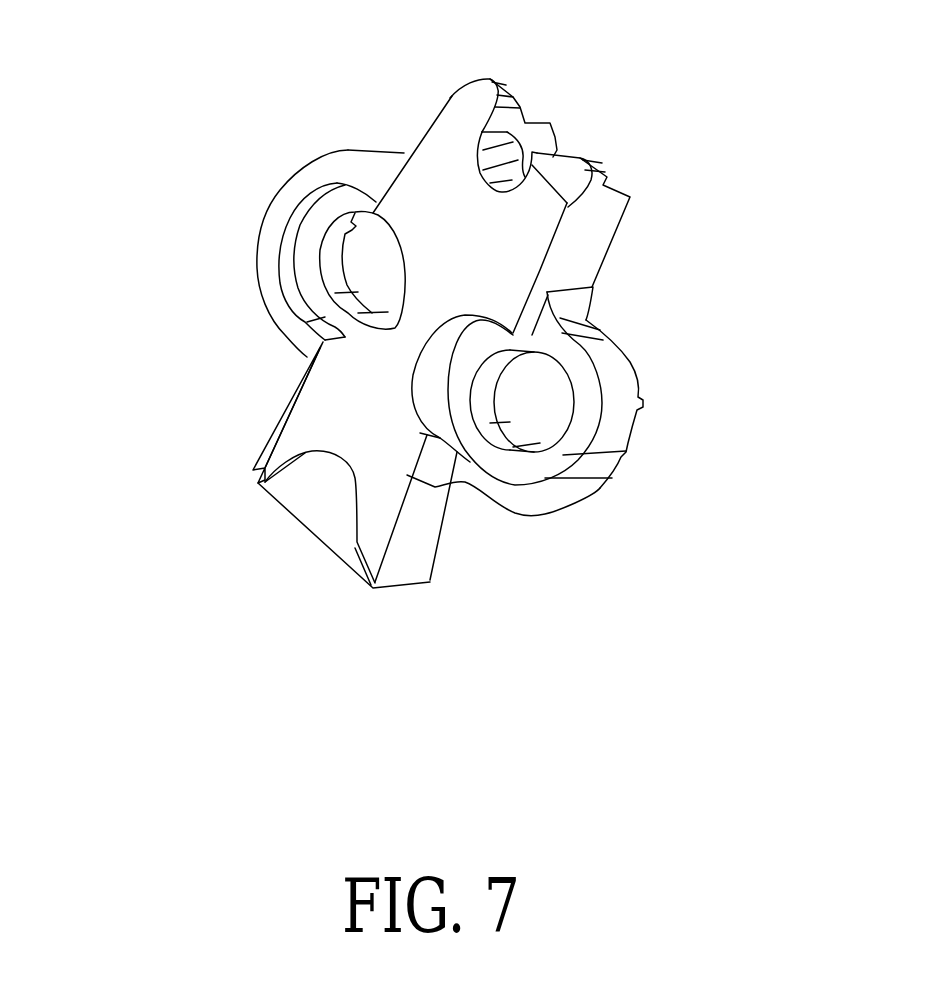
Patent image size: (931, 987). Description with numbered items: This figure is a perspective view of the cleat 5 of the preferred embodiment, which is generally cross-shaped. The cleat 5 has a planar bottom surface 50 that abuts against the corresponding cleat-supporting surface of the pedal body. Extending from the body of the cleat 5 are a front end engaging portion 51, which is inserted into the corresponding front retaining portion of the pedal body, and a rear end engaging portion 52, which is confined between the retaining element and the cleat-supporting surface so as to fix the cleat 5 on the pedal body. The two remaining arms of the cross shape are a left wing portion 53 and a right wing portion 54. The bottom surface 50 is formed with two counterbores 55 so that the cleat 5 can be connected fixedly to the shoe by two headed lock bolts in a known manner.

The cleat 5 is at (212, 393).
The bottom surface 50 is at (445, 183).
The front end engaging portion 51 is at (618, 230).
The rear end engaging portion 52 is at (440, 562).
The left wing portion 53 is at (635, 433).
The right wing portion 54 is at (257, 270).
The counterbores 55 is at (543, 385).